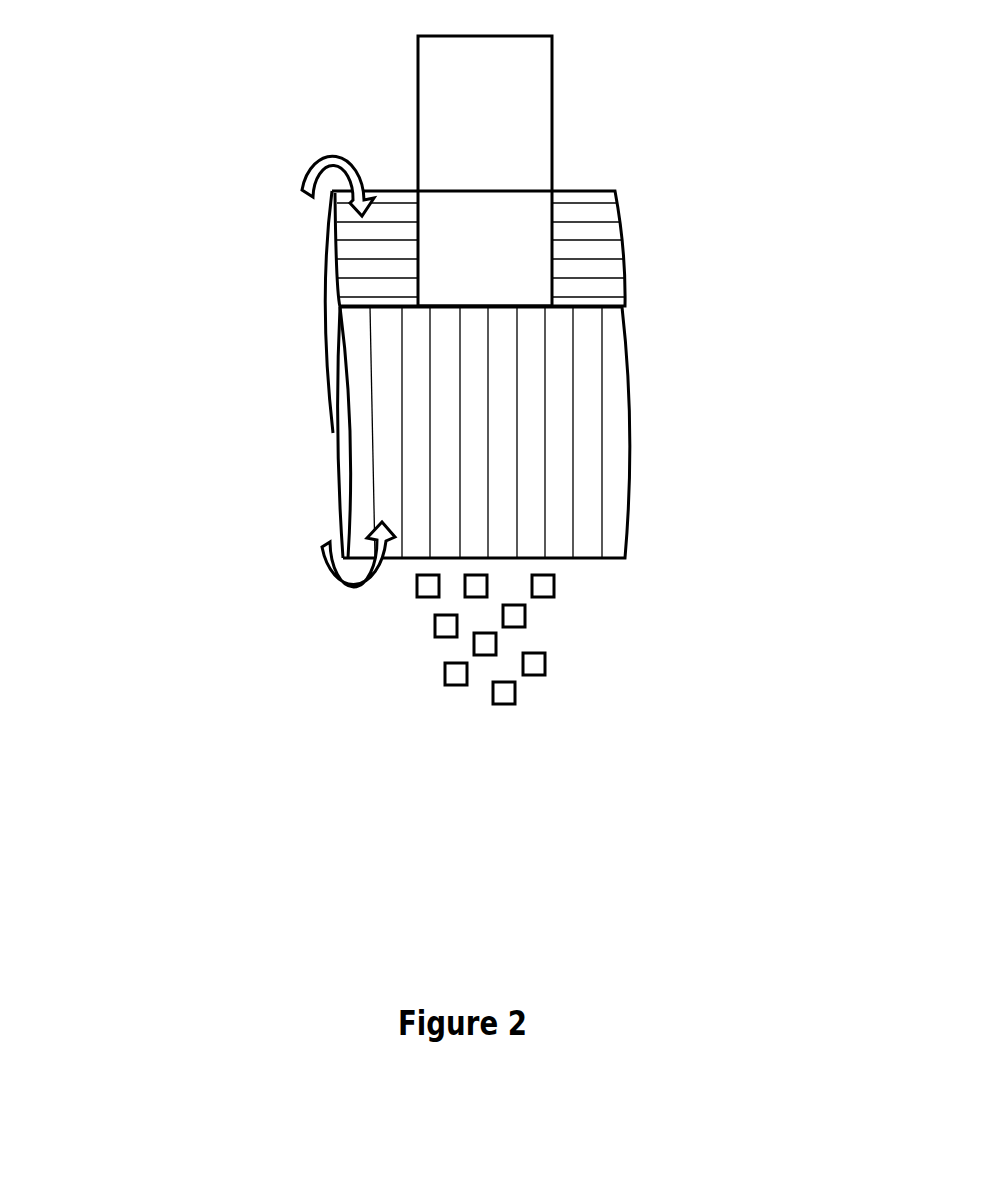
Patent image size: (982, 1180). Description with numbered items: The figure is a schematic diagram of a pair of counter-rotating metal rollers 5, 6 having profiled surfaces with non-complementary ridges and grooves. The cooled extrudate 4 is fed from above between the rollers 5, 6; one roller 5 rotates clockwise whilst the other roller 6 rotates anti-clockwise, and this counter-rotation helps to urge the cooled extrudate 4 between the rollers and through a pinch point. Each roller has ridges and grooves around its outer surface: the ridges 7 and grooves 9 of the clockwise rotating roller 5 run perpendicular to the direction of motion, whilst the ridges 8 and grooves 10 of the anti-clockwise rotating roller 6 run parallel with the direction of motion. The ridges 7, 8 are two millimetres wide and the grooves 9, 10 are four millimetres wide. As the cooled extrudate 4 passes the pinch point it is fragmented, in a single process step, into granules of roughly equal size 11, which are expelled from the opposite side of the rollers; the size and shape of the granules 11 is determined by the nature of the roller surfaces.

The cooled extrudate 4 is at (555, 142).
The clockwise rotating roller 5 is at (454, 219).
The anti-clockwise rotating roller 6 is at (337, 452).
The ridges 7 is at (595, 240).
The ridges 8 is at (468, 510).
The grooves 9 is at (400, 215).
The grooves 10 is at (388, 445).
The granules 11 is at (543, 665).